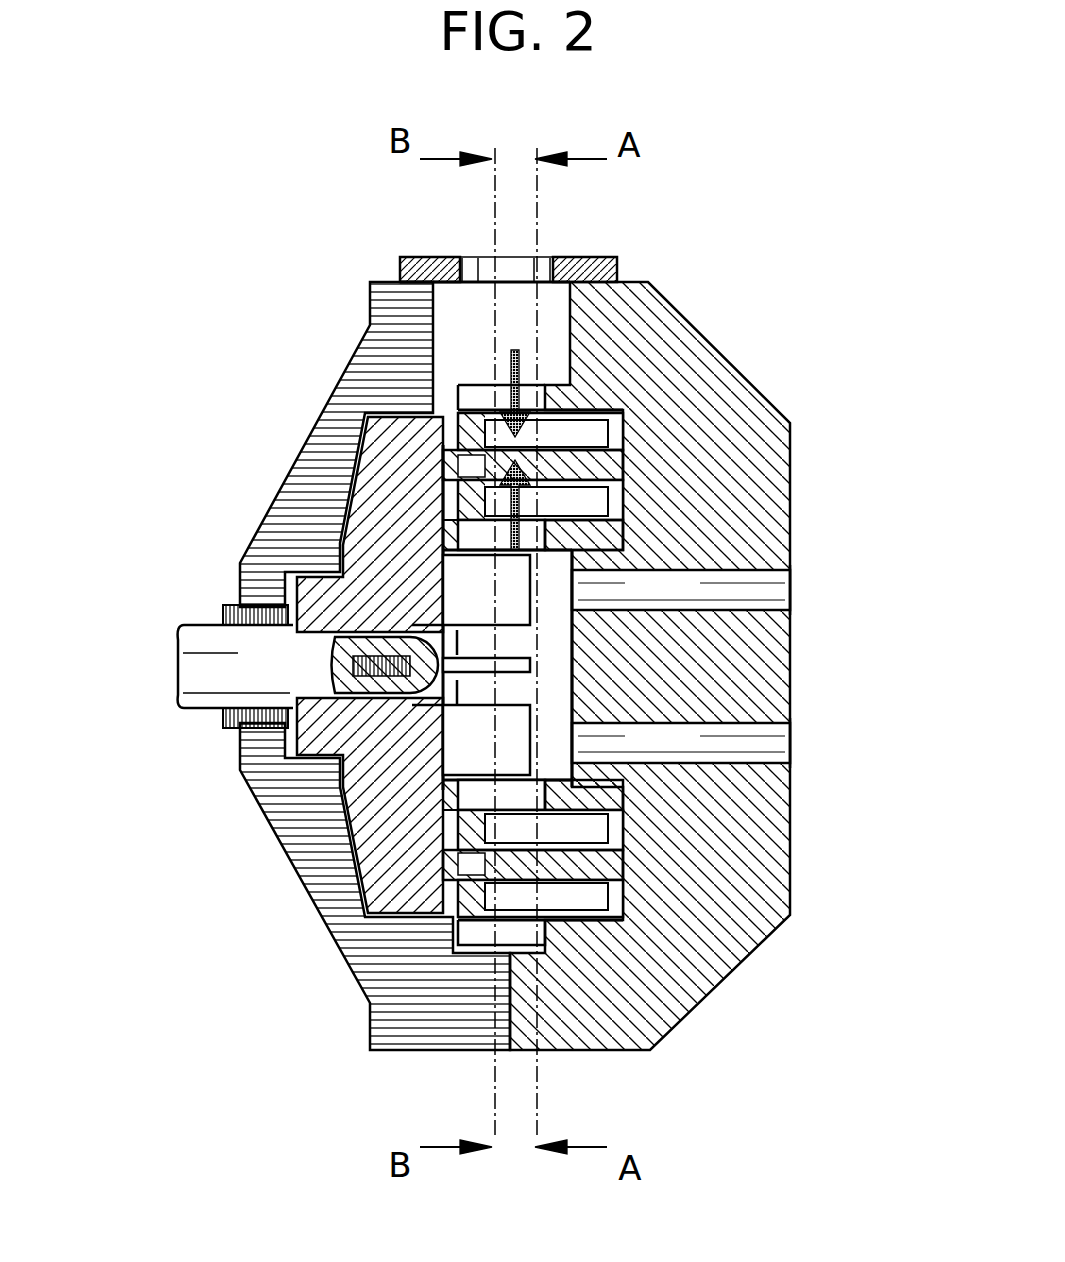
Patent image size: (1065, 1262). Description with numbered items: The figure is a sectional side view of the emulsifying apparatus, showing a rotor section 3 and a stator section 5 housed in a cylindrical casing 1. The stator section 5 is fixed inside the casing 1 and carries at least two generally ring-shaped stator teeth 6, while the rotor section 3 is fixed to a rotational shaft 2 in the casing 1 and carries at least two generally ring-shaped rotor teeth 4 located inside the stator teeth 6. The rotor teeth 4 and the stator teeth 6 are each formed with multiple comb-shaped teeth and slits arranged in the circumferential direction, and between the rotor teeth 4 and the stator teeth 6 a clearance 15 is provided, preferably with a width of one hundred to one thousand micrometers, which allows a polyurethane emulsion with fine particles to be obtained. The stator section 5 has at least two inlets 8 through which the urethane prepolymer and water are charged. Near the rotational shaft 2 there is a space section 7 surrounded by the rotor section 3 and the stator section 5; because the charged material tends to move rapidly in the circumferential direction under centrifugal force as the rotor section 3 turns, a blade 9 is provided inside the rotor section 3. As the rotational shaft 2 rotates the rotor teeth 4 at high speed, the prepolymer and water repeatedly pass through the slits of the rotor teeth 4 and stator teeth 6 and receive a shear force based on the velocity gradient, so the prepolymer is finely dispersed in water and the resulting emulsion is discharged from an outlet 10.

The cylindrical casing 1 is at (318, 425).
The rotational shaft 2 is at (238, 668).
The rotor section 3 is at (363, 515).
The rotor teeth 4 is at (595, 503).
The stator section 5 is at (600, 970).
The stator teeth 6 is at (468, 933).
The space section 7 is at (453, 697).
The inlets 8 is at (760, 580).
The blade 9 is at (472, 758).
The outlet 10 is at (472, 257).
The clearance 15 is at (523, 450).